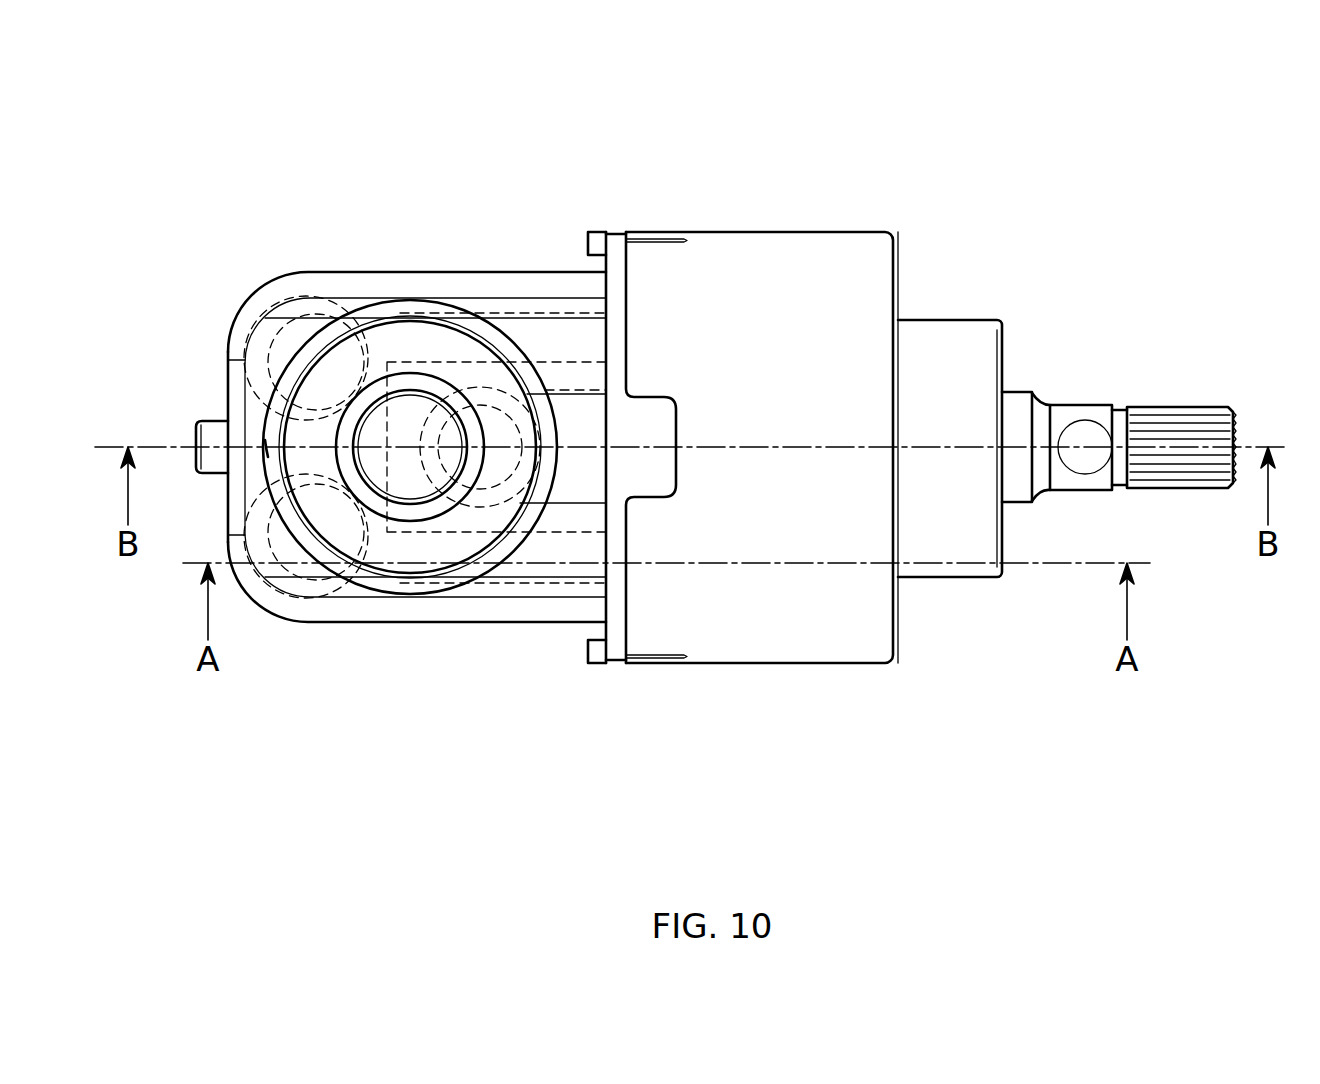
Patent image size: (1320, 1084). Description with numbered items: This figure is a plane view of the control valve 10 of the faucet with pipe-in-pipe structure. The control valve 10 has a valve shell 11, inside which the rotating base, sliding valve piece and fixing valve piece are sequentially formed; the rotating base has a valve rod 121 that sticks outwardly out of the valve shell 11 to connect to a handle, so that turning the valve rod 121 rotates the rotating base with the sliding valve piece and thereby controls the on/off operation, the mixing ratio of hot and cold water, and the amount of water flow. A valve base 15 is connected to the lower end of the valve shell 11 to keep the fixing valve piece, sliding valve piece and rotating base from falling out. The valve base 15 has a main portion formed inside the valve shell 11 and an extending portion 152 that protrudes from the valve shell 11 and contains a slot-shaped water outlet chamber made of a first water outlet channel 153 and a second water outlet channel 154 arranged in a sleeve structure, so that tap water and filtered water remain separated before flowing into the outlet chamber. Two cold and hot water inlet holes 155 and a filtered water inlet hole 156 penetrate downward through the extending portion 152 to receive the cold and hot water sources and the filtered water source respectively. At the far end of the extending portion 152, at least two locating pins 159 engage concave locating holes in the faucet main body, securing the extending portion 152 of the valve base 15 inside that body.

The control valve 10 is at (876, 215).
The valve shell 11 is at (878, 627).
The valve base 15 is at (613, 617).
The valve rod 121 is at (1164, 410).
The extending portion 152 is at (488, 272).
The first water outlet channel 153 is at (268, 457).
The second water outlet channel 154 is at (366, 443).
The cold and hot water inlet holes 155 is at (272, 300).
The filtered water inlet hole 156 is at (606, 390).
The locating pins 159 is at (204, 426).